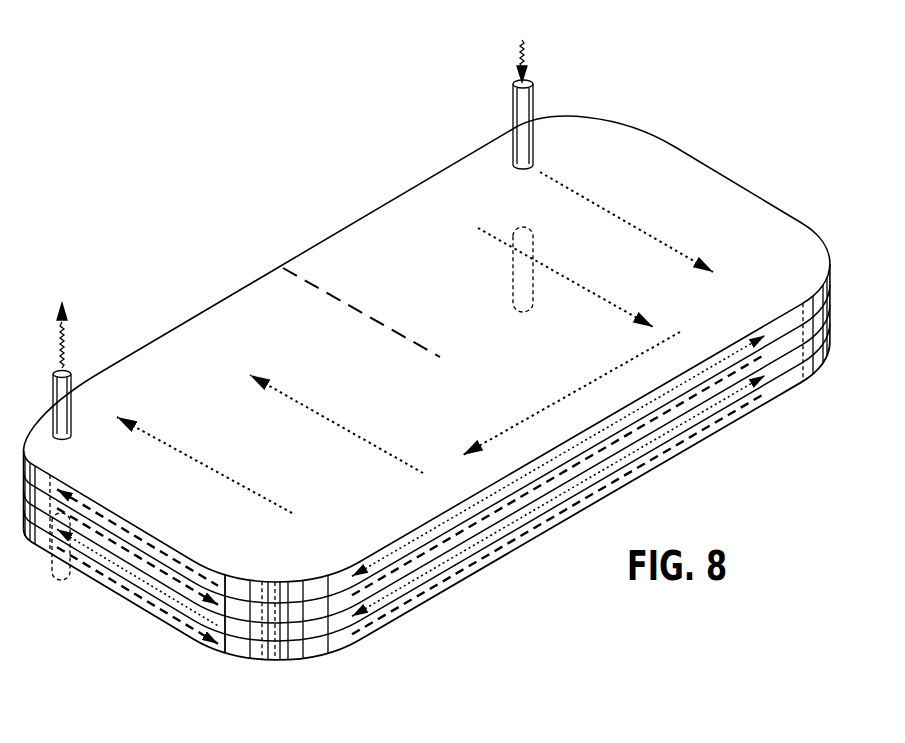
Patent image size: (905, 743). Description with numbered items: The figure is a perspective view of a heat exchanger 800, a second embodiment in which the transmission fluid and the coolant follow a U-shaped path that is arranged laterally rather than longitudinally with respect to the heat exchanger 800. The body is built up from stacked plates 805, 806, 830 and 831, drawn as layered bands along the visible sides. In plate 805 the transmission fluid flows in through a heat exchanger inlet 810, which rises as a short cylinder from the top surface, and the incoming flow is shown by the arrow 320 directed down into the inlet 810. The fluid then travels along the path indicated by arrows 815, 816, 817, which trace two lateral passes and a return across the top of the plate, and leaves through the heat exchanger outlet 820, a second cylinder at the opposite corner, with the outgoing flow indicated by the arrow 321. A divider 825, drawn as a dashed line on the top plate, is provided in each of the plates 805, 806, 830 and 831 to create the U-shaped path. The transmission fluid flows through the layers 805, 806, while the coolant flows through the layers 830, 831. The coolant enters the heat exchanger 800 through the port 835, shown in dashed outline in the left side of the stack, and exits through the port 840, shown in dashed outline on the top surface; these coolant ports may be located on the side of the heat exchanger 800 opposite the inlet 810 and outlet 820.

The heat exchanger 800 is at (713, 143).
The plate 805 is at (790, 322).
The plate 830 is at (765, 358).
The plate 806 is at (781, 368).
The plate 831 is at (813, 365).
The heat exchanger inlet 810 is at (525, 108).
The inlet flow 320 is at (523, 62).
The heat exchanger outlet 820 is at (70, 403).
The outlet flow 321 is at (63, 338).
The arrow 815 is at (605, 210).
The arrow 816 is at (517, 428).
The arrow 817 is at (255, 490).
The divider 825 is at (342, 303).
The port 840 is at (513, 277).
The port 835 is at (63, 583).